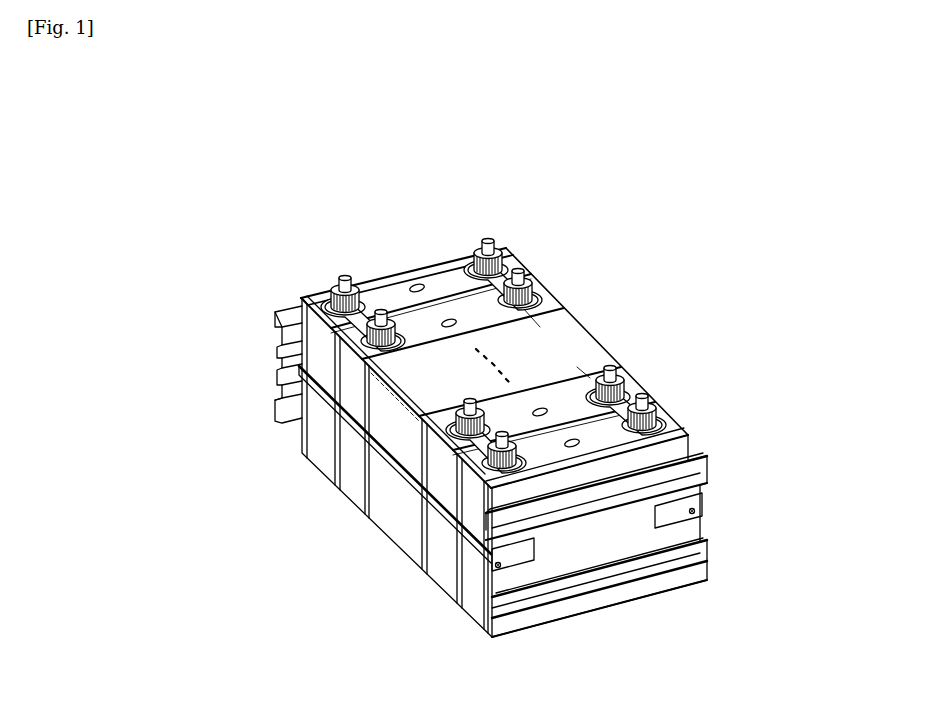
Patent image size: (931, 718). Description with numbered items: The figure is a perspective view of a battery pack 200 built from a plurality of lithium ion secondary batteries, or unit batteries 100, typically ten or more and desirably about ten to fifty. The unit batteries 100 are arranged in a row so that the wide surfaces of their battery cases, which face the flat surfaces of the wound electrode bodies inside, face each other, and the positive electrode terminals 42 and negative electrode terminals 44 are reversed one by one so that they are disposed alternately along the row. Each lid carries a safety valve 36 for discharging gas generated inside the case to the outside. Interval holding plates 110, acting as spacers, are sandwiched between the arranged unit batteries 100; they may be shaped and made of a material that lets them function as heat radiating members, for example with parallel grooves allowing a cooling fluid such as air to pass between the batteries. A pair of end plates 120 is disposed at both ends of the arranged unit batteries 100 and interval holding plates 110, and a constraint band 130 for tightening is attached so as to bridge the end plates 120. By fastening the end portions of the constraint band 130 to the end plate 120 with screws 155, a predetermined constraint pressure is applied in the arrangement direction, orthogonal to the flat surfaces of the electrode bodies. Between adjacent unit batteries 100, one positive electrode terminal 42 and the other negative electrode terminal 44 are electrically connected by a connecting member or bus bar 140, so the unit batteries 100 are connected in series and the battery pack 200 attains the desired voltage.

The battery pack 200 is at (768, 183).
The lithium ion secondary battery (unit battery) 100 is at (470, 315).
The interval holding plate 110 is at (680, 437).
The end plate 120 is at (703, 467).
The constraint band 130 is at (448, 522).
The connecting member (bus bar) 140 is at (372, 305).
The screw 155 is at (700, 511).
The safety valve 36 is at (415, 283).
The positive electrode terminal 42 is at (346, 280).
The negative electrode terminal 44 is at (383, 320).